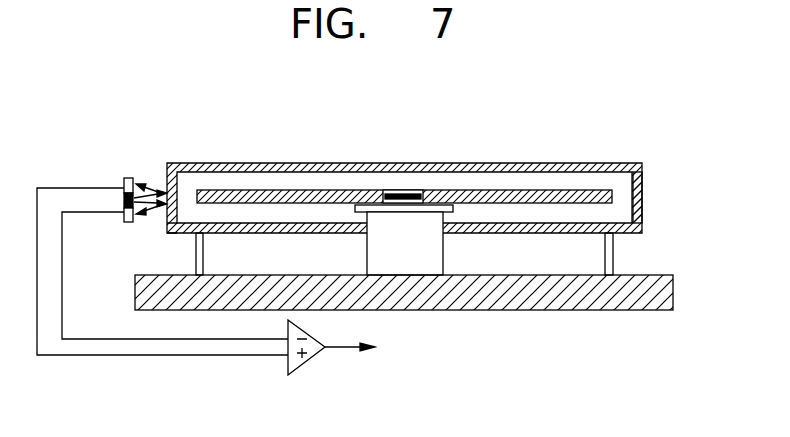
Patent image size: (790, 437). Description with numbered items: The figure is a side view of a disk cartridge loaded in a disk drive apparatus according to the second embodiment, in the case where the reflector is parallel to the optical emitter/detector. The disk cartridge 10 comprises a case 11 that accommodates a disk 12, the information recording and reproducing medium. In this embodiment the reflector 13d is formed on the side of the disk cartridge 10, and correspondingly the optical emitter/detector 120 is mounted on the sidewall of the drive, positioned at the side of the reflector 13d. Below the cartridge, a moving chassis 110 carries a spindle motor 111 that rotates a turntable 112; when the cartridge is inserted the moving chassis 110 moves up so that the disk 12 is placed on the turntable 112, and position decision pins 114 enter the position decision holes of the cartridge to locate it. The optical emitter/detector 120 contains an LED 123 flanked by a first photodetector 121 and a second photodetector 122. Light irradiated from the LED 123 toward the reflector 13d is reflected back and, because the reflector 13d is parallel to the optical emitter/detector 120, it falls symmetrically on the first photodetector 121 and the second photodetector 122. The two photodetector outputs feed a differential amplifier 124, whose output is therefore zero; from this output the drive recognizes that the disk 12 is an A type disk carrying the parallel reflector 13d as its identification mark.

The disk cartridge 10 is at (386, 140).
The case 11 is at (266, 163).
The disk 12 is at (612, 190).
The reflector 13d is at (641, 194).
The moving chassis 110 is at (565, 293).
The spindle motor 111 is at (433, 258).
The turntable 112 is at (420, 190).
The position decision pin 114 is at (614, 255).
The optical emitter/detector 120 is at (162, 223).
The first photodetector 121 is at (128, 178).
The second photodetector 122 is at (127, 222).
The LED 123 is at (124, 196).
The differential amplifier 124 is at (305, 362).